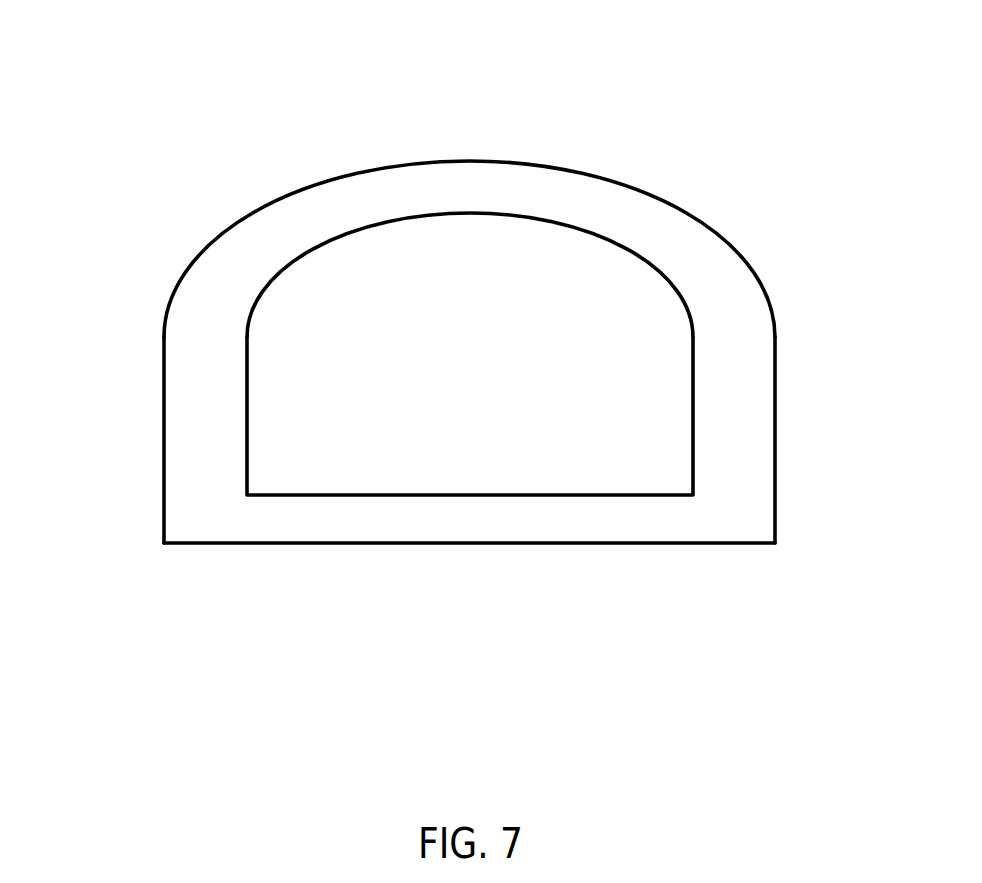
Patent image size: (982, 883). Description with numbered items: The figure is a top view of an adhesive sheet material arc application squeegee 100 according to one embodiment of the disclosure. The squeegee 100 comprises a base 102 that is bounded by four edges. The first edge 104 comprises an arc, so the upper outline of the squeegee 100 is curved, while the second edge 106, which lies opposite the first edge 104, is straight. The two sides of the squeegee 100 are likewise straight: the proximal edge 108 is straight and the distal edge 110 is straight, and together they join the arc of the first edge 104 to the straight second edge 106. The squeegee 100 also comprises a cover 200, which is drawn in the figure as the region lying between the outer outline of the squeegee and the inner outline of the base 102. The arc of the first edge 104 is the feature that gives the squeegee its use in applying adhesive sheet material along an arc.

The adhesive sheet material arc application squeegee 100 is at (463, 341).
The base 102 is at (325, 458).
The first edge 104 is at (467, 160).
The second edge 106 is at (463, 544).
The proximal edge 108 is at (777, 450).
The distal edge 110 is at (160, 445).
The cover 200 is at (658, 228).